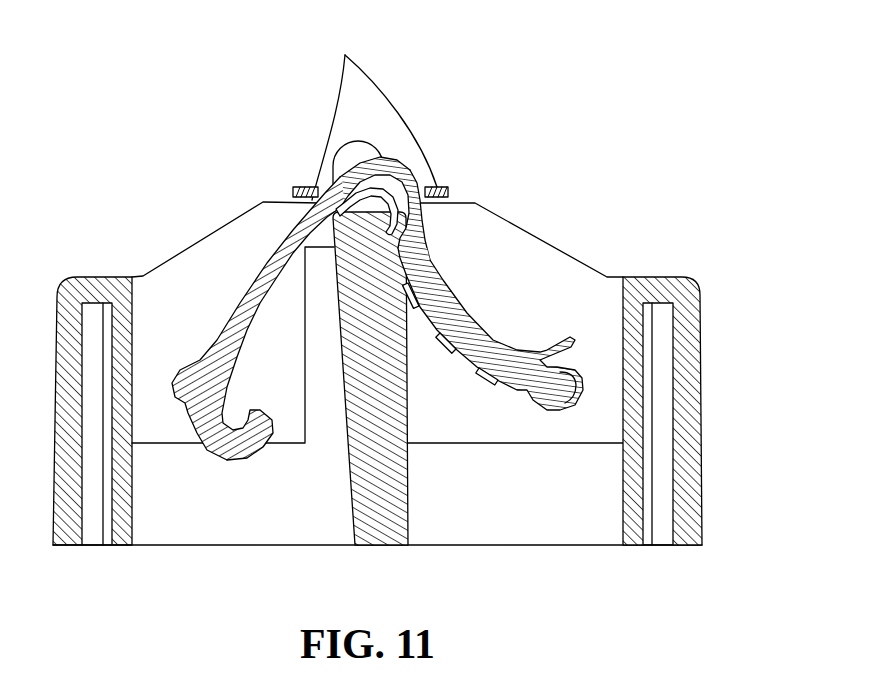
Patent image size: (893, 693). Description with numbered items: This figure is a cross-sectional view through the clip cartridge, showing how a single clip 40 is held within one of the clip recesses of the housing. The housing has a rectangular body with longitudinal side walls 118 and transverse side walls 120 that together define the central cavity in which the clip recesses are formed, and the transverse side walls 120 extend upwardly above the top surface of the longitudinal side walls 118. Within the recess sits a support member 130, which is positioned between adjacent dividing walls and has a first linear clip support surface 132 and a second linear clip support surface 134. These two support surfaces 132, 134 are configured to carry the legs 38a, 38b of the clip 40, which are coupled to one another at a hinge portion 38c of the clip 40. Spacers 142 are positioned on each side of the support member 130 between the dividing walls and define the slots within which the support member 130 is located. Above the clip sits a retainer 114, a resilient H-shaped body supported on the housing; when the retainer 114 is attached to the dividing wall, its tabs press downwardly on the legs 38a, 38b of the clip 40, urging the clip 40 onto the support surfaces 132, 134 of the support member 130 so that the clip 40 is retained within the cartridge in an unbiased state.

The retainer 114 is at (370, 116).
The longitudinal side wall 118 is at (683, 371).
The transverse side wall 120 is at (560, 278).
The support member 130 is at (340, 444).
The first linear clip support surface 132 is at (345, 210).
The second linear clip support surface 134 is at (432, 262).
The spacer 142 is at (358, 145).
The leg 38a is at (220, 327).
The leg 38b is at (470, 335).
The hinge portion 38c is at (445, 190).
The clip 40 is at (431, 216).